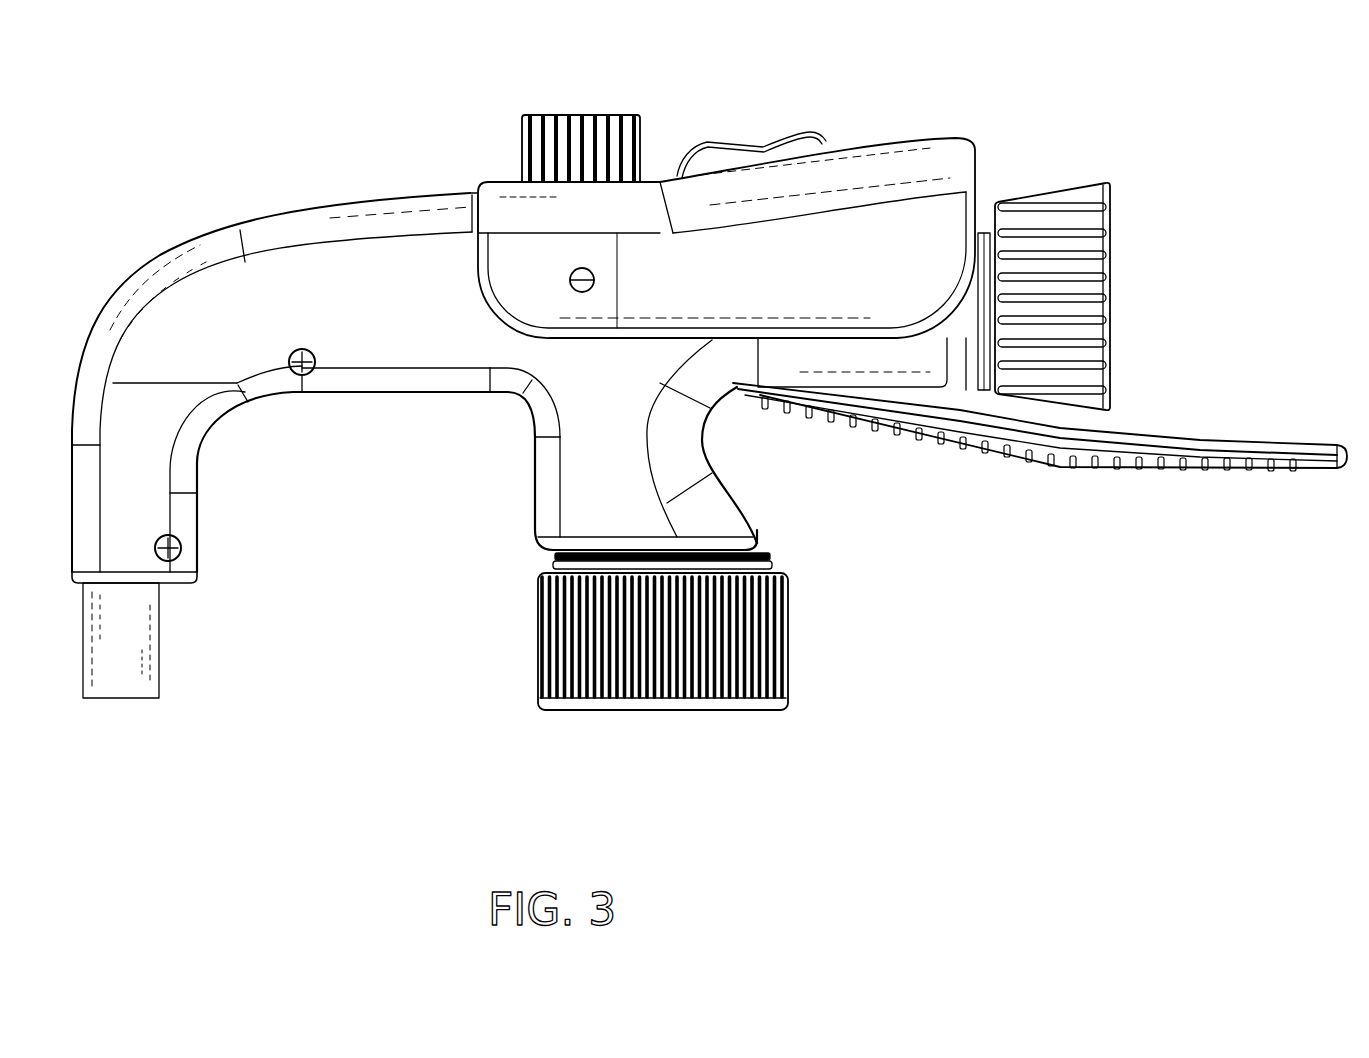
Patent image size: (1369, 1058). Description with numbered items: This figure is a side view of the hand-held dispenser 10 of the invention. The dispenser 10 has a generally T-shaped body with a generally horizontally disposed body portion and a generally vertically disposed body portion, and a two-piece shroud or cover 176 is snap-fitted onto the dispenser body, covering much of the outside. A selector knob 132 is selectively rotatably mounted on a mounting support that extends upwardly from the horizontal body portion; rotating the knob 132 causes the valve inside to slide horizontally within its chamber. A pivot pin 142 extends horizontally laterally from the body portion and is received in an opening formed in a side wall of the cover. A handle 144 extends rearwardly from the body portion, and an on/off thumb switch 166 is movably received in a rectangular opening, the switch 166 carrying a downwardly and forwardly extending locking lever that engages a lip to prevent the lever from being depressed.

The hand-held dispenser 10 is at (709, 372).
The selector knob 132 is at (512, 149).
The pivot pin 142 is at (582, 293).
The handle 144 is at (1197, 440).
The on/off thumb switch 166 is at (750, 145).
The two-piece shroud or cover 176 is at (385, 214).